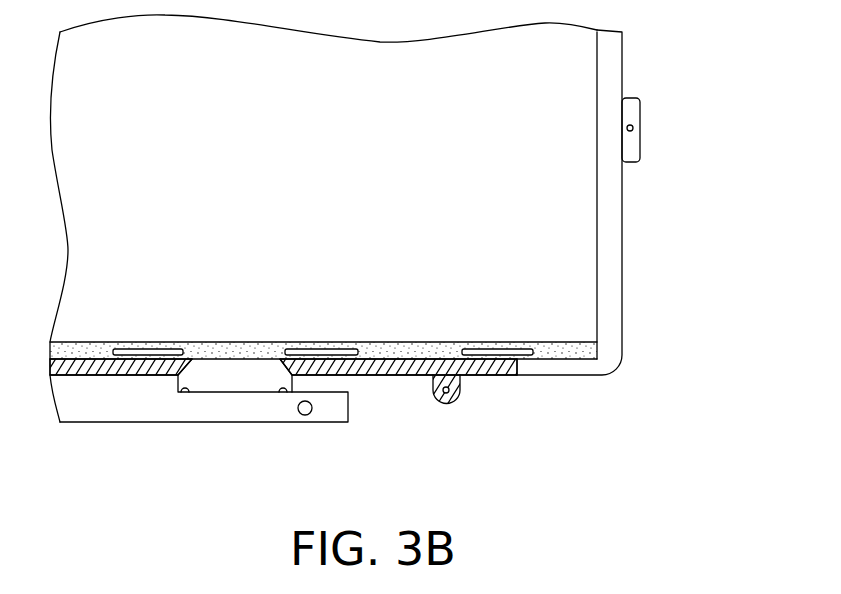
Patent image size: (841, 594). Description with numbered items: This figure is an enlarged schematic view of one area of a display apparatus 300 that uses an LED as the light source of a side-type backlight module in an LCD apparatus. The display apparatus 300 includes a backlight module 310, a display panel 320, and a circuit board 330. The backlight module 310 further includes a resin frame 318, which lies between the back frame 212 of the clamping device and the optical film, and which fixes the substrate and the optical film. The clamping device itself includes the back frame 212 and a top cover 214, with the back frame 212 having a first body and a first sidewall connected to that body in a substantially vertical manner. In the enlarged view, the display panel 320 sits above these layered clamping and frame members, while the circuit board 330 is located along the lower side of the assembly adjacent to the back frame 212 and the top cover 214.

The display apparatus 300 is at (740, 522).
The backlight module 310 is at (622, 217).
The resin frame 318 is at (606, 294).
The display panel 320 is at (522, 68).
The back frame 212 is at (551, 370).
The top cover 214 is at (122, 375).
The circuit board 330 is at (221, 405).